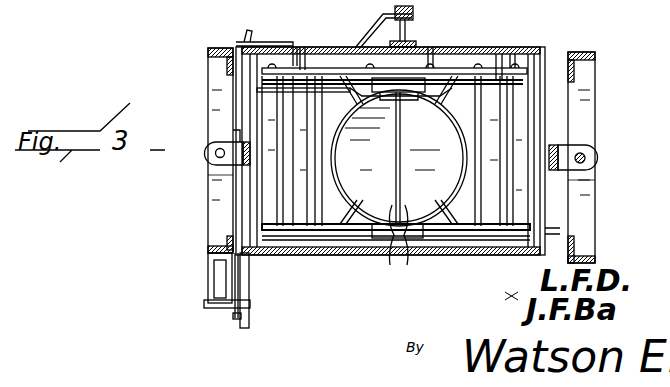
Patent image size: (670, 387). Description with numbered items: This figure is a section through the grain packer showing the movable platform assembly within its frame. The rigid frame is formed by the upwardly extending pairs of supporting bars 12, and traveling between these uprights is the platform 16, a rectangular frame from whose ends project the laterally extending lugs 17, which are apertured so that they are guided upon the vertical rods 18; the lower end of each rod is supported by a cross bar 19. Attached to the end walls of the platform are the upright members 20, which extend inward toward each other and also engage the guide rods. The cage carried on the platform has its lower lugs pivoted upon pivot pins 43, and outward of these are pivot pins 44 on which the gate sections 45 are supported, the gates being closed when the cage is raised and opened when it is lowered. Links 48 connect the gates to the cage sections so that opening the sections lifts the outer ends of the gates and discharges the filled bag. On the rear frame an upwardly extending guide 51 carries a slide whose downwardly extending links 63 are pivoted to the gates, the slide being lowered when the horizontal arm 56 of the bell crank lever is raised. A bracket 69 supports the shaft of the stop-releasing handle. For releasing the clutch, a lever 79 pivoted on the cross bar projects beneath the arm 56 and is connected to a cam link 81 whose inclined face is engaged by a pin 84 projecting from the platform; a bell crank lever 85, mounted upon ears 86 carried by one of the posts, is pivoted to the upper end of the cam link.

The supporting bars 12 is at (210, 48).
The platform 16 is at (348, 256).
The laterally extending lugs 17 is at (212, 168).
The vertical rods 18 is at (215, 150).
The cross bar 19 is at (208, 214).
The upright members 20 is at (238, 140).
The pivot pins 43 is at (322, 164).
The pivot pins 44 is at (293, 62).
The gate sections 45 is at (397, 249).
The links 48 is at (257, 90).
The guide 51 is at (433, 65).
The horizontal arm 56 is at (330, 47).
The links 63 is at (362, 44).
The bracket 69 is at (542, 234).
The lever 79 is at (233, 105).
The cam link 81 is at (250, 276).
The pin 84 is at (232, 240).
The bell crank lever 85 is at (235, 319).
The ears 86 is at (207, 303).